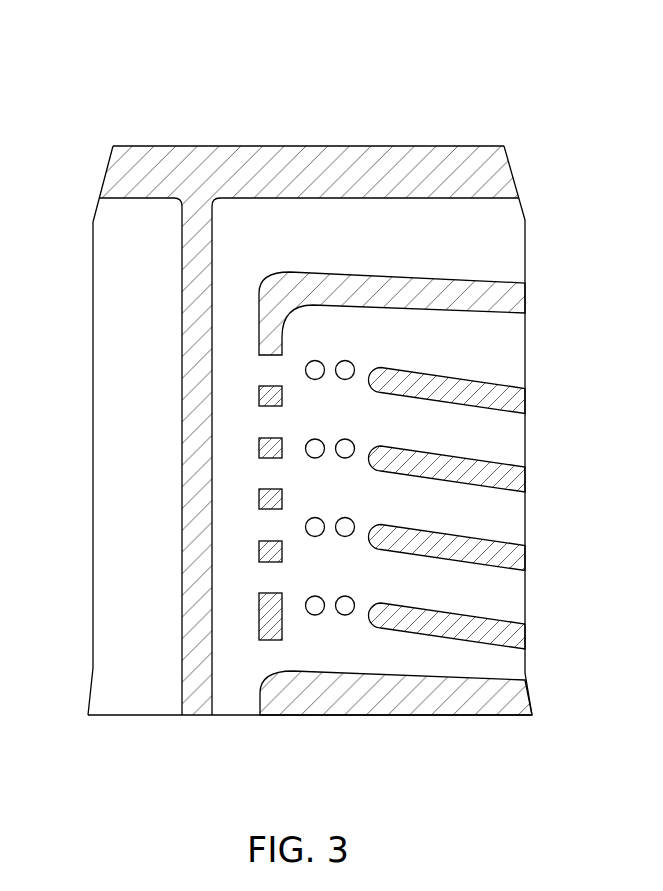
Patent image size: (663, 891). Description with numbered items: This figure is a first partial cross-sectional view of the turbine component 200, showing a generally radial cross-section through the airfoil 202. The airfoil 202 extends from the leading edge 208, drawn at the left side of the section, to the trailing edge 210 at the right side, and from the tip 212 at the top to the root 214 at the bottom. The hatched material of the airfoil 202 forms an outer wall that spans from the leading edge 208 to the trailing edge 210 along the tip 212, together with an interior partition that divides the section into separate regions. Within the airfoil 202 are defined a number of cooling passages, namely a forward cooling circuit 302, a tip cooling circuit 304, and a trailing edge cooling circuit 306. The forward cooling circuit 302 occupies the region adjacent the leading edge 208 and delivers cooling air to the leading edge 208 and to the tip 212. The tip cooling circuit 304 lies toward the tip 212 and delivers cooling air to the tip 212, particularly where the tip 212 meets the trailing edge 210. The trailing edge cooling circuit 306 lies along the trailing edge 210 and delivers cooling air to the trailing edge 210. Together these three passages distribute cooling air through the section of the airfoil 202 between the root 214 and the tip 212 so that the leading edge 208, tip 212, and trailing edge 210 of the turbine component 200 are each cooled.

The turbine component 200 is at (507, 90).
The airfoil 202 is at (105, 173).
The leading edge 208 is at (93, 402).
The trailing edge 210 is at (527, 264).
The tip 212 is at (350, 150).
The root 214 is at (235, 717).
The forward cooling circuit 302 is at (108, 545).
The tip cooling circuit 304 is at (508, 216).
The trailing edge cooling circuit 306 is at (508, 357).